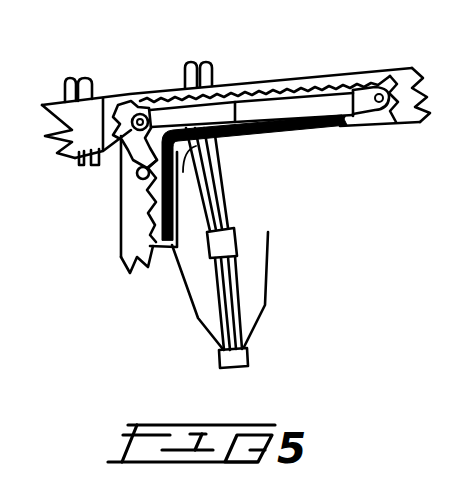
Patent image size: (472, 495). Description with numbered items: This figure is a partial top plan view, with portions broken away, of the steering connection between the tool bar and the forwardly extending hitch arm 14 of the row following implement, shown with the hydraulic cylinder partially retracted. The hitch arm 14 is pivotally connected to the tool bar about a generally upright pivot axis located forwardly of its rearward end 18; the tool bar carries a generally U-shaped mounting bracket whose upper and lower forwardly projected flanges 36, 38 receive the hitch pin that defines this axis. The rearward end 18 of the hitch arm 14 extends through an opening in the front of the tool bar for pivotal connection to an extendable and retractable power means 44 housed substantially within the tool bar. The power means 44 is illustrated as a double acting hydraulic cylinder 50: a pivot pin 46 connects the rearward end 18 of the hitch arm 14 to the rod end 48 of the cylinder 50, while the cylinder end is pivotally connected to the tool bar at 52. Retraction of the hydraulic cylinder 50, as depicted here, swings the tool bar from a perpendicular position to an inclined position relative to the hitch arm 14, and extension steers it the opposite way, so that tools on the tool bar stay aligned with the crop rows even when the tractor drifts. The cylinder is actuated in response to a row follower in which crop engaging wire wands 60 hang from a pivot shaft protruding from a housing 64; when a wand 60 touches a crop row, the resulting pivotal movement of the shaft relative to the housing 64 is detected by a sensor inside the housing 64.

The hitch arm 14 is at (123, 248).
The rearward end of hitch arm 18 is at (145, 104).
The upper forwardly projected flange 36 is at (107, 97).
The lower forwardly projected flange 38 is at (180, 167).
The extendable and retractable power means 44 is at (262, 105).
The pivot pin 46 is at (73, 160).
The rod end 48 is at (139, 117).
The hydraulic cylinder 50 is at (357, 96).
The pivotal connection of cylinder end 52 is at (382, 90).
The crop engaging wire wands 60 is at (268, 277).
The housing 64 is at (248, 366).